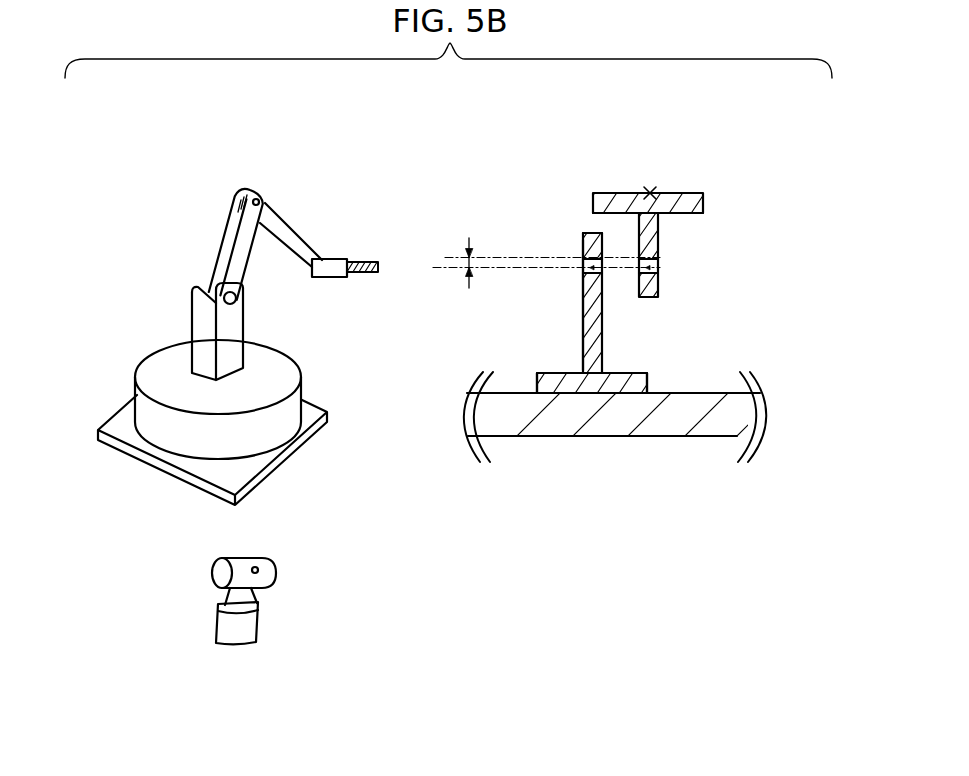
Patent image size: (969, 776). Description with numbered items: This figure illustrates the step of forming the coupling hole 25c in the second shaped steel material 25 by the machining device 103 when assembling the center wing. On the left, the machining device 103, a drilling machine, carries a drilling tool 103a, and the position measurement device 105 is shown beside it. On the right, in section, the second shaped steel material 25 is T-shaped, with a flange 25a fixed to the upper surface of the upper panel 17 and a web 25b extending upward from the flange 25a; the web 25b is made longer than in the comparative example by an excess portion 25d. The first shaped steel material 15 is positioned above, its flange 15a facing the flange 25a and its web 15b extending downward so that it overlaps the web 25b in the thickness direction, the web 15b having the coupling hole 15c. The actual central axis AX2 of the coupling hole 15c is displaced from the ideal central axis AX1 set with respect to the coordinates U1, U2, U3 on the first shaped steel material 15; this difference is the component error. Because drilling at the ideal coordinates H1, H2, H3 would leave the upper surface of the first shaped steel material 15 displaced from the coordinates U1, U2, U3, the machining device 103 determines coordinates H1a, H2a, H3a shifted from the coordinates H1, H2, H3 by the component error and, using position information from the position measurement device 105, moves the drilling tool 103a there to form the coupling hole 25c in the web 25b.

The machining device 103 is at (283, 452).
The drilling tool 103a is at (365, 261).
The position measurement device 105 is at (259, 621).
The first shaped steel material 15 is at (703, 202).
The flange 15a is at (622, 214).
The web 15b is at (658, 238).
The coupling hole 15c is at (658, 268).
The second shaped steel material 25 is at (538, 388).
The flange 25a is at (625, 372).
The web 25b is at (581, 333).
The coupling hole 25c is at (583, 272).
The excess portion 25d is at (583, 235).
The upper panel 17 is at (610, 418).
The central axis AX1 is at (483, 257).
The central axis AX2 is at (485, 268).
The measurement points U1, U2, U3 is at (650, 190).
The holes in stem H1, H2, H3 is at (602, 262).
The holes in pin H1a, H2a, H3a is at (602, 272).